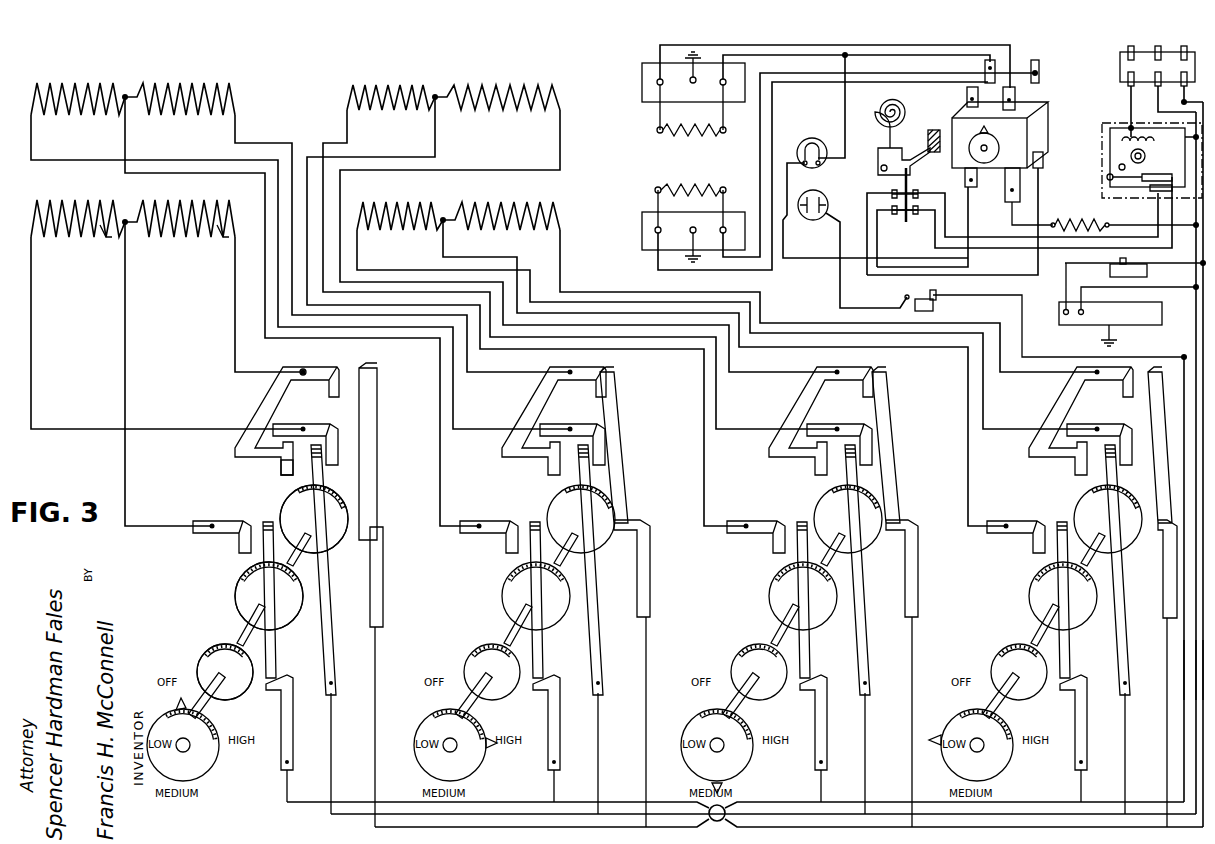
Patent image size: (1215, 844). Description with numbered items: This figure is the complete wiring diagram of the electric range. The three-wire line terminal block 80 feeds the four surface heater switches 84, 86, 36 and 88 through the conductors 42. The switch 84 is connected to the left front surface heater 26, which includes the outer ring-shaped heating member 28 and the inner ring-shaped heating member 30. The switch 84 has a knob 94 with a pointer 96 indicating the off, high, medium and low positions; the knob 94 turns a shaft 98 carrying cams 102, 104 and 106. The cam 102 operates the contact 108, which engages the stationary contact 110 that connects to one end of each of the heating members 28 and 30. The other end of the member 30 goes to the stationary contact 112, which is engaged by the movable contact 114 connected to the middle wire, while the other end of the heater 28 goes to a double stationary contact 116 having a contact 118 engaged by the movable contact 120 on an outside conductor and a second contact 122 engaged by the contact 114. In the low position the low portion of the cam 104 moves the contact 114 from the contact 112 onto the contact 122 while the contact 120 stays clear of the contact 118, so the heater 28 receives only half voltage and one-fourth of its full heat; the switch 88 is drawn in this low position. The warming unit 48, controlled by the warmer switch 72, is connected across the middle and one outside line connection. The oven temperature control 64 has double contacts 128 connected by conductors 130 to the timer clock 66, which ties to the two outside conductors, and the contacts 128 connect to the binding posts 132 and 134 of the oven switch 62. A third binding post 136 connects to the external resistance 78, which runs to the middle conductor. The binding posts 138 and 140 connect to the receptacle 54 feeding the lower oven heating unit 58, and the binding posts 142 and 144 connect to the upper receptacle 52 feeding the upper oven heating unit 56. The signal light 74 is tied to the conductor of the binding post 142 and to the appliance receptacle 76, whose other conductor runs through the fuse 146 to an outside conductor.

The surface heating unit 26 is at (187, 139).
The outer ring-shaped heating member 28 is at (222, 228).
The inner ring-shaped heating member 30 is at (104, 228).
The surface heater switch 36 is at (749, 607).
The conductors 42 is at (1196, 676).
The warming unit 48 is at (1118, 322).
The plug receptacle 52 is at (646, 72).
The plug receptacle 54 is at (646, 240).
The upper oven heating unit 56 is at (690, 138).
The lower oven heating unit 58 is at (703, 185).
The oven switch 62 is at (968, 126).
The oven temperature control 64 is at (907, 158).
The timer clock 66 is at (1108, 166).
The warmer switch 72 is at (1130, 272).
The signal light 74 is at (806, 142).
The appliance receptacle 76 is at (823, 200).
The external resistance 78 is at (1082, 222).
The line terminal block 80 is at (1122, 62).
The surface heater switch 84 is at (270, 584).
The surface heater switch 86 is at (477, 609).
The surface heater switch 88 is at (1009, 603).
The knob 94 is at (198, 762).
The pointer 96 is at (172, 700).
The shaft 98 is at (246, 632).
The cam 102 is at (224, 658).
The cam 104 is at (243, 584).
The cam 106 is at (292, 515).
The contact 108 is at (275, 652).
The stationary contact 110 is at (213, 521).
The stationary contact 112 is at (333, 428).
The movable contact 114 is at (321, 568).
The double stationary contact 116 is at (272, 397).
The contact 118 is at (338, 378).
The movable contact 120 is at (372, 417).
The contact 122 is at (286, 468).
The double contacts 128 is at (906, 216).
The conductors 130 is at (945, 230).
The binding post 132 is at (965, 178).
The binding post 134 is at (1040, 150).
The binding post 136 is at (1010, 190).
The binding post 138 is at (967, 97).
The binding post 140 is at (1037, 66).
The binding post 142 is at (985, 70).
The binding post 144 is at (1015, 100).
The fuse 146 is at (950, 300).